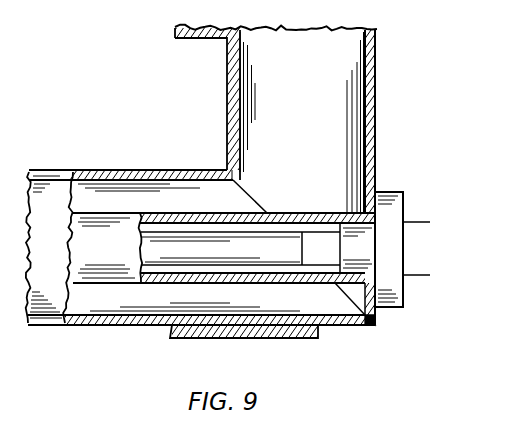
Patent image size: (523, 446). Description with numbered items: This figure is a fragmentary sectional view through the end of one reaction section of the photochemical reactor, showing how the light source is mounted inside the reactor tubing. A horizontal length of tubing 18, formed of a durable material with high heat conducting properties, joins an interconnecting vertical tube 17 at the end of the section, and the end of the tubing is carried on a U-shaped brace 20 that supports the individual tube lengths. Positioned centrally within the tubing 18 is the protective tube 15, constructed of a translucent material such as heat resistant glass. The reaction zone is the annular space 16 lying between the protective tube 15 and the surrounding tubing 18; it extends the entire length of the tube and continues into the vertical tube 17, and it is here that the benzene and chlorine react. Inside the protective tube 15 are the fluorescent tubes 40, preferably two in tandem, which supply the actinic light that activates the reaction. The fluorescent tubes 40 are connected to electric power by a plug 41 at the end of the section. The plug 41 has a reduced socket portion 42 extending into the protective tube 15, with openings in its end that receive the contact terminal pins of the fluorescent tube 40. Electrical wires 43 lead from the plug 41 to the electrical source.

The protective tube 15 is at (218, 198).
The annular space 16 is at (118, 212).
The interconnecting vertical tube 17 is at (376, 108).
The length of tubing 18 is at (142, 171).
The U-shaped brace 20 is at (318, 338).
The fluorescent tube 40 is at (290, 257).
The plug 41 is at (395, 209).
The reduced socket portion 42 is at (327, 245).
The electrical wires 43 is at (421, 224).